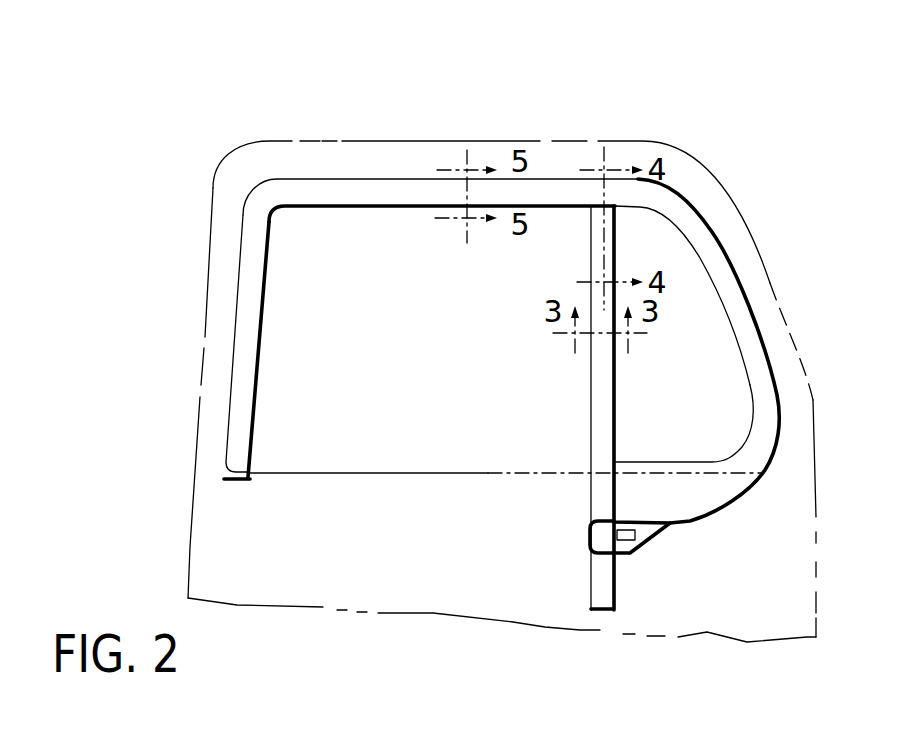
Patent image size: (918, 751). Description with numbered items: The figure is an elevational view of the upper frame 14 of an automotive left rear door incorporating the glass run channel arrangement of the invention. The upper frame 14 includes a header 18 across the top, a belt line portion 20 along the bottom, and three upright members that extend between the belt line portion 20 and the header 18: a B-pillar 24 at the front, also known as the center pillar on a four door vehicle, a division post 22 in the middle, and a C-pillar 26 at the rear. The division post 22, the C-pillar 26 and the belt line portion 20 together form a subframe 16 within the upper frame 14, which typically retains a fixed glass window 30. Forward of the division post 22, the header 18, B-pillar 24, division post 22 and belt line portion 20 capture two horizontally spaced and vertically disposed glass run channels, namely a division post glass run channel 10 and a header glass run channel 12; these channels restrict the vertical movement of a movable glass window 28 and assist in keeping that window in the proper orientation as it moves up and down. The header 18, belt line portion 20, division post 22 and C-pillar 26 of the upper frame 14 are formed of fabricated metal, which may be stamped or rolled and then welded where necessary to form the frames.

The division post glass run channel 10 is at (610, 415).
The header glass run channel 12 is at (413, 191).
The upper frame 14 is at (408, 377).
The subframe 16 is at (693, 373).
The header 18 is at (504, 140).
The belt line portion 20 is at (348, 484).
The division post 22 is at (636, 233).
The B-pillar 24 is at (221, 319).
The C-pillar 26 is at (769, 307).
The glass window 28 is at (272, 407).
The fixed glass window 30 is at (710, 442).